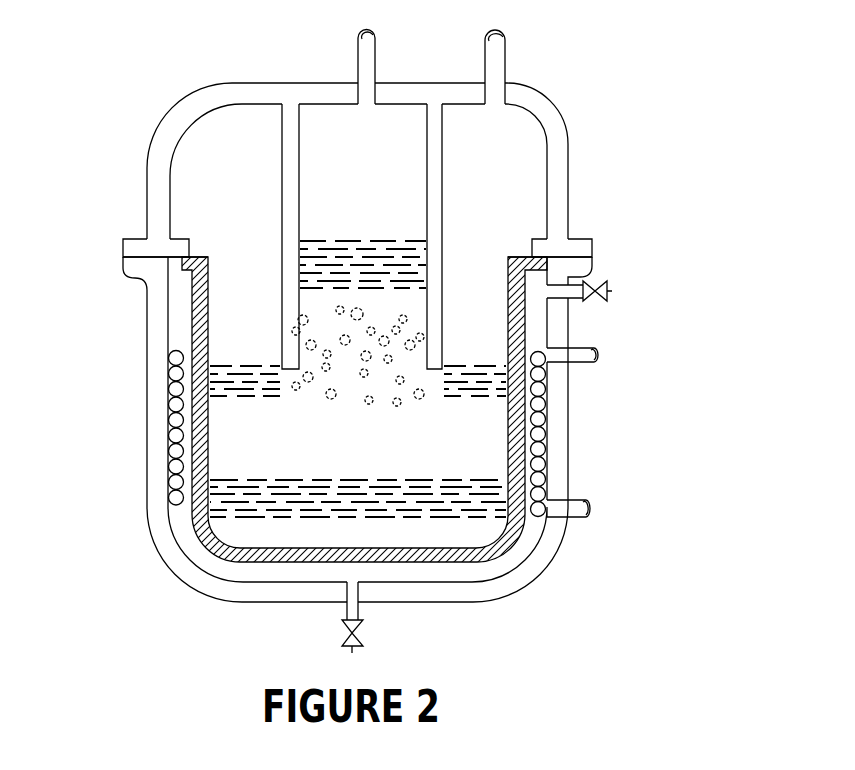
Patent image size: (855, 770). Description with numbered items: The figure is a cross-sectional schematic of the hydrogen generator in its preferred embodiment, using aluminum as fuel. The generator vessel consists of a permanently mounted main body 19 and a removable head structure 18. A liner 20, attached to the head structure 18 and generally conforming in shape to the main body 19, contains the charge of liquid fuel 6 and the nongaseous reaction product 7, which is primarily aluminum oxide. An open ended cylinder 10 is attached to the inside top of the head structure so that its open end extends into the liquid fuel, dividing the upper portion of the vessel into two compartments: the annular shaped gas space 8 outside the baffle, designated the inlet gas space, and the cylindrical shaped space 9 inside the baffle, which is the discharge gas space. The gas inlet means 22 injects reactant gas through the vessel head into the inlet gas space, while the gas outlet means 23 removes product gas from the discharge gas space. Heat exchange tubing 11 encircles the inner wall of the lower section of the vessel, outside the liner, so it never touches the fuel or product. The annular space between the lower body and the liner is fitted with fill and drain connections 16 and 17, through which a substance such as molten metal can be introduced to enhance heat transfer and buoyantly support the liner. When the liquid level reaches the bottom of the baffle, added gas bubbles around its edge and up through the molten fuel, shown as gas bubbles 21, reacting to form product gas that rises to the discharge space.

The liquid fuel 6 is at (240, 457).
The nongaseous reaction product 7 is at (226, 510).
The annular shaped gas space 8 is at (223, 152).
The cylindrical shaped space 9 is at (372, 175).
The open ended cylinder 10 is at (444, 207).
The tubing 11 is at (583, 499).
The fill connection 16 is at (606, 284).
The drain connection 17 is at (364, 629).
The head structure 18 is at (146, 200).
The main body 19 is at (146, 380).
The liner 20 is at (512, 552).
The gas bubbles 21 is at (328, 353).
The gas inlet means 22 is at (510, 62).
The gas outlet means 23 is at (357, 58).